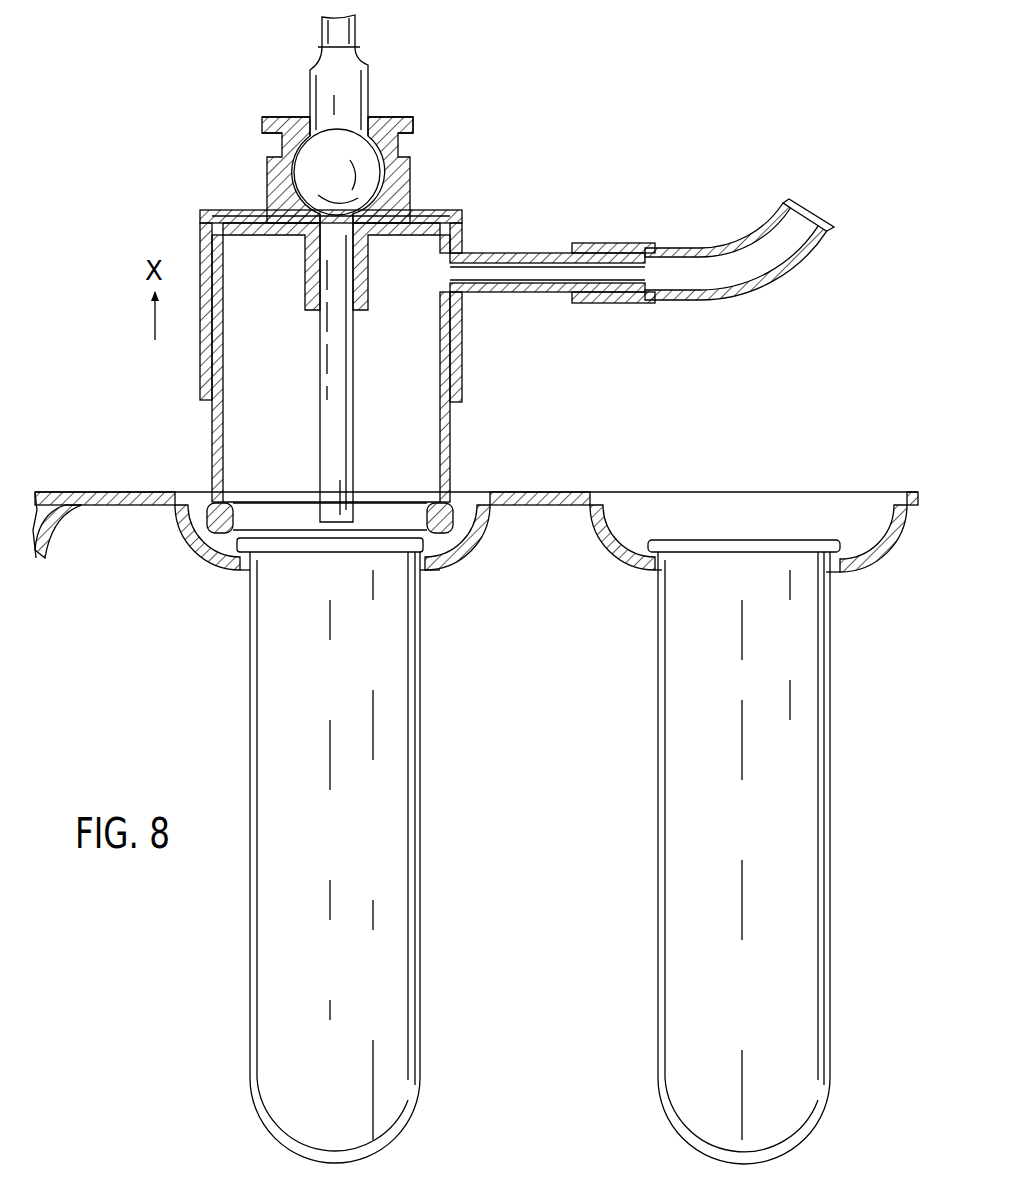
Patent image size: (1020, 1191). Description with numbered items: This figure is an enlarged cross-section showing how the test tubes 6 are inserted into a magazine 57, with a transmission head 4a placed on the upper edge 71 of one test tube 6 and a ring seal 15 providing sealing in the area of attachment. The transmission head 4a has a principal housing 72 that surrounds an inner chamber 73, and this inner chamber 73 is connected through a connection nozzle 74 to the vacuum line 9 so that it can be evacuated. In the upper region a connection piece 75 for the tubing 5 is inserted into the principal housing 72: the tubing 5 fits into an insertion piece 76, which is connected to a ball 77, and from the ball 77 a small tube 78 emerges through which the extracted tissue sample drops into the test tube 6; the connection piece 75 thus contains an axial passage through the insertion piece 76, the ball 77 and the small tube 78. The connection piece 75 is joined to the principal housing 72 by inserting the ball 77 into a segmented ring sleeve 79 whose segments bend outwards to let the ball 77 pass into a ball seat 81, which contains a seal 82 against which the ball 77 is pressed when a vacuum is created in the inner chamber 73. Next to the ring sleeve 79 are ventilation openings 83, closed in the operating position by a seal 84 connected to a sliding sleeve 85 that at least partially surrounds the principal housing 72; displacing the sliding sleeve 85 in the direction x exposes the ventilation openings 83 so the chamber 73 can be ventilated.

The transmission head 4a is at (476, 187).
The tubing 5 is at (354, 28).
The test tube 6 is at (421, 850).
The vacuum line 9 is at (681, 247).
The ring seal 15 is at (466, 503).
The magazine 57 is at (569, 492).
The upper edge 71 is at (238, 570).
The principal housing 72 is at (453, 438).
The inner chamber 73 is at (413, 426).
The connection nozzle 74 is at (506, 252).
The connection piece 75 is at (378, 87).
The insertion piece 76 is at (366, 62).
The ball 77 is at (363, 152).
The small tube 78 is at (346, 362).
The segmented ring sleeve 79 is at (399, 119).
The ball seat 81 is at (406, 190).
The seal 82 is at (384, 237).
The ventilation openings 83 is at (253, 237).
The seal 84 is at (250, 210).
The sliding sleeve 85 is at (201, 262).